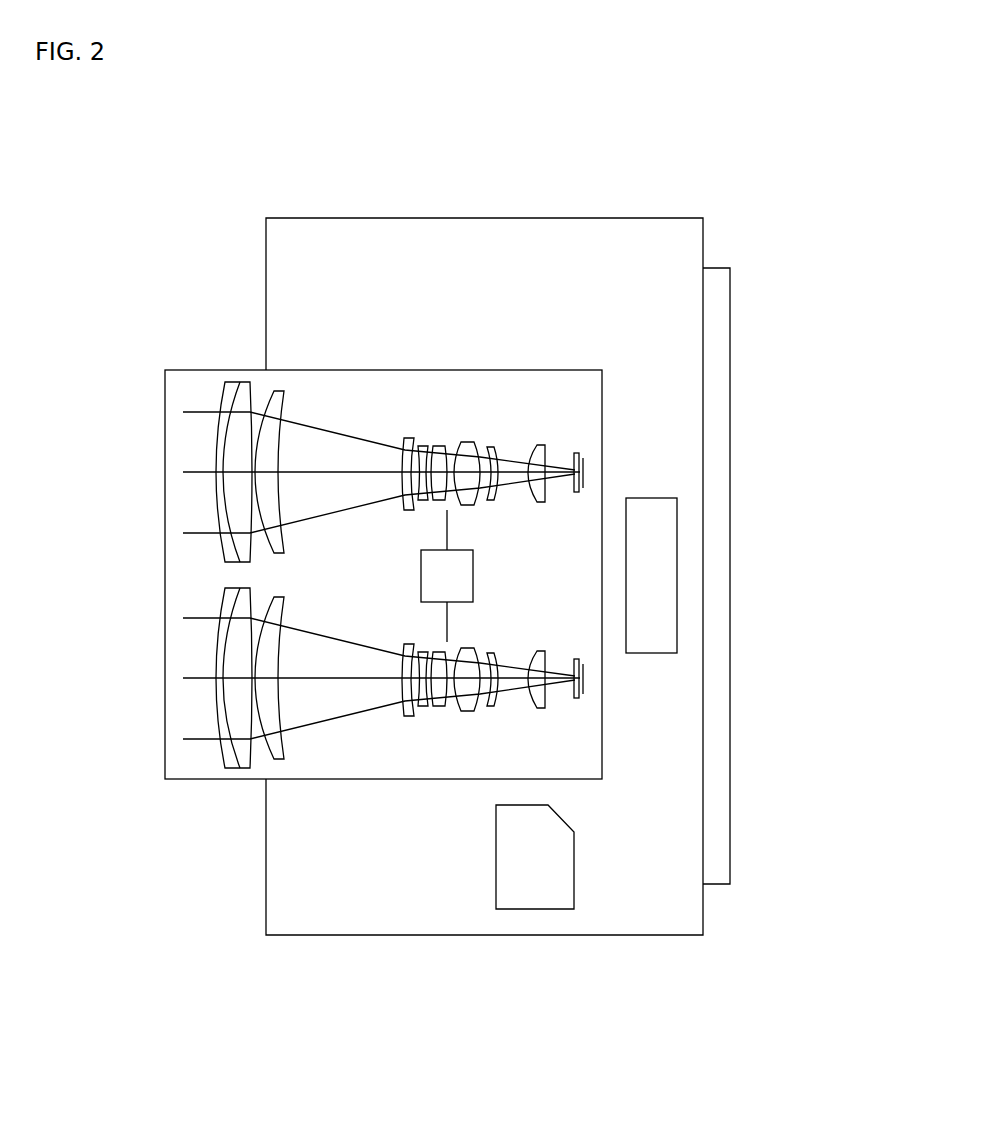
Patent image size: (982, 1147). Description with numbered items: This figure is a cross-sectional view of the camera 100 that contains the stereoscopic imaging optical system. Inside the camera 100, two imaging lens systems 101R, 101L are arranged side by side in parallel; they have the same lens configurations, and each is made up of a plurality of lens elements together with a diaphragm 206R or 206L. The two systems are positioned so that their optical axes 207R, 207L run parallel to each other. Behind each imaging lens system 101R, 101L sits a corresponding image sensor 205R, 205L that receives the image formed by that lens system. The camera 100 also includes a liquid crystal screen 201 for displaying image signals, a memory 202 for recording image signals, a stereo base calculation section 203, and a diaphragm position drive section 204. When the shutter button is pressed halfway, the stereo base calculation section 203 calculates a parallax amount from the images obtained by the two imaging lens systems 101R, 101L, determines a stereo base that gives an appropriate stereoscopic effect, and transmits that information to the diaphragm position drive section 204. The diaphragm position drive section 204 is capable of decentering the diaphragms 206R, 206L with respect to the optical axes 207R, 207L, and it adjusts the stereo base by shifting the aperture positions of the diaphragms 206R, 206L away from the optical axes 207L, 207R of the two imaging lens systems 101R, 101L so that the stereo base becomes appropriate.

The camera 100 is at (192, 270).
The imaging lens system 101R is at (242, 422).
The imaging lens system 101L is at (240, 627).
The liquid crystal screen 201 is at (720, 758).
The memory 202 is at (548, 883).
The stereo base calculation section 203 is at (650, 553).
The diaphragm position drive section 204 is at (447, 577).
The image sensor 205R is at (583, 468).
The image sensor 205L is at (584, 693).
The diaphragm 206R is at (436, 450).
The diaphragm 206L is at (446, 702).
The optical axis 207R is at (318, 470).
The optical axis 207L is at (290, 678).